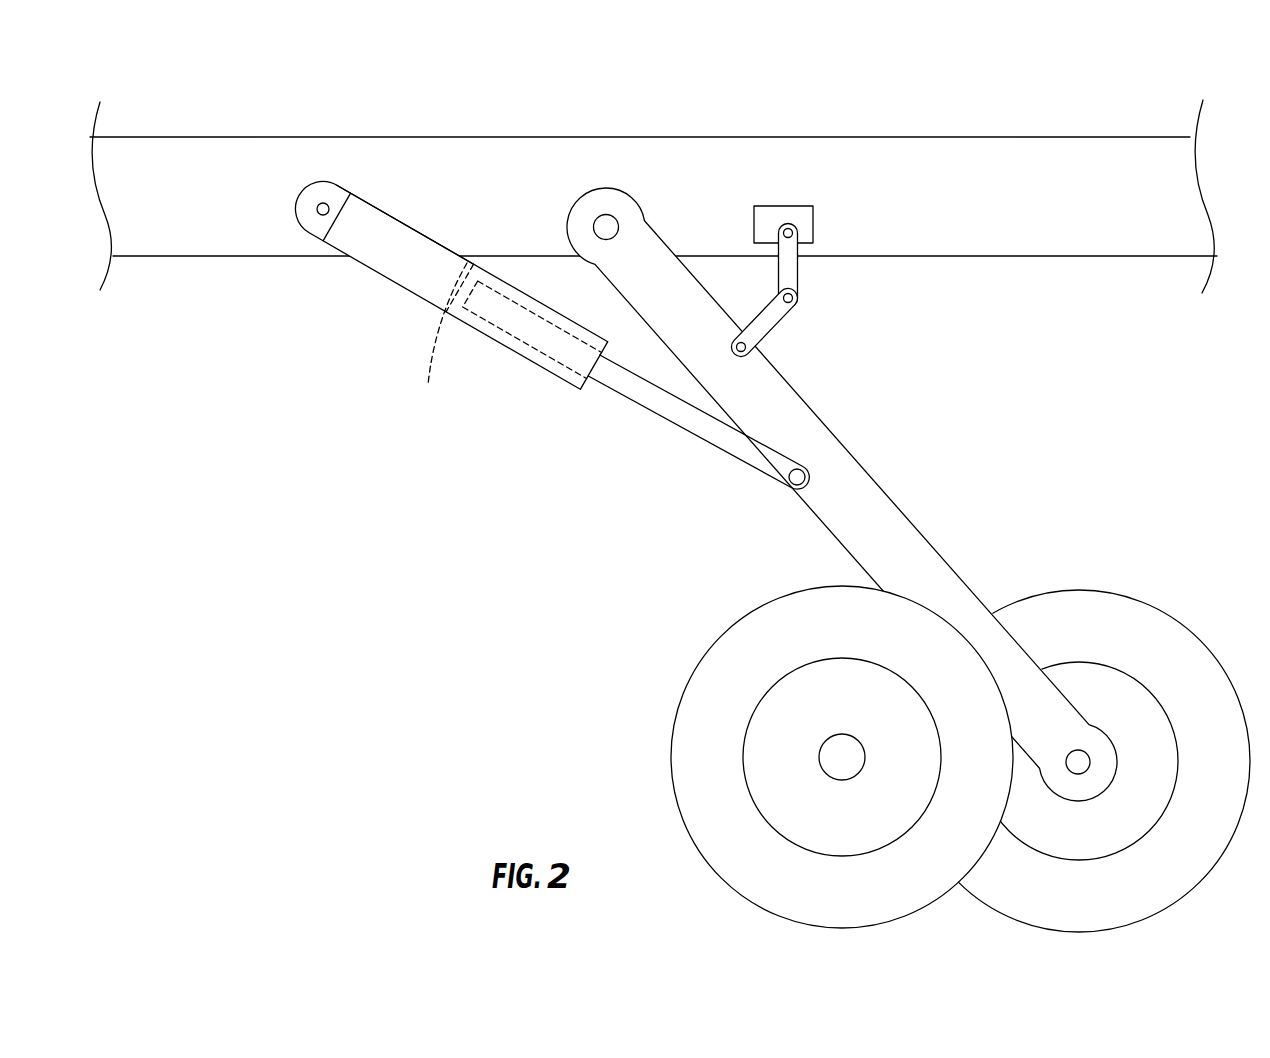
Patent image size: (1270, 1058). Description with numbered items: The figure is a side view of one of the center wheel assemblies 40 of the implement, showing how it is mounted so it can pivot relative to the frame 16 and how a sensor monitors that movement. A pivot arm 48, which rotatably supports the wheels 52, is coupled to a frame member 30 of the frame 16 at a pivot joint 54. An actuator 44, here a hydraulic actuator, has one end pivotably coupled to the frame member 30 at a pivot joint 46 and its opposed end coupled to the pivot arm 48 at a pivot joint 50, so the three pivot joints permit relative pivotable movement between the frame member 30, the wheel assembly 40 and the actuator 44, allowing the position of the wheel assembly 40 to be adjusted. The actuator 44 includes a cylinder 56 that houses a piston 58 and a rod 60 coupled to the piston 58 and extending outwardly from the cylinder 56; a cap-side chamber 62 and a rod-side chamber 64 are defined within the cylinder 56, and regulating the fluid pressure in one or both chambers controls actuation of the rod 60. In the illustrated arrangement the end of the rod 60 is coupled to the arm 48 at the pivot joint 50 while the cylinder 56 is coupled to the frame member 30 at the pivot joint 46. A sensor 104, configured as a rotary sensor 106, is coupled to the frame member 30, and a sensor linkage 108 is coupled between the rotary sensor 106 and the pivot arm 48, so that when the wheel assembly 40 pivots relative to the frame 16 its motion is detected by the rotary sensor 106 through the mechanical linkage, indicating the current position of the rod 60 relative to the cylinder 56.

The frame 16 is at (731, 96).
The frame member 30 is at (980, 165).
The wheel assembly 40 is at (148, 86).
The actuator 44 is at (583, 319).
The pivot joint 46 is at (325, 204).
The pivot arm 48 is at (905, 541).
The pivot joint 50 is at (808, 470).
The wheel 52 is at (1166, 640).
The pivot joint 54 is at (606, 227).
The cylinder 56 is at (498, 346).
The piston 58 is at (441, 344).
The rod 60 is at (683, 411).
The cap-side chamber 62 is at (418, 276).
The rod-side chamber 64 is at (565, 369).
The sensor 104 is at (798, 186).
The rotary sensor 106 is at (806, 210).
The sensor linkage 108 is at (801, 279).